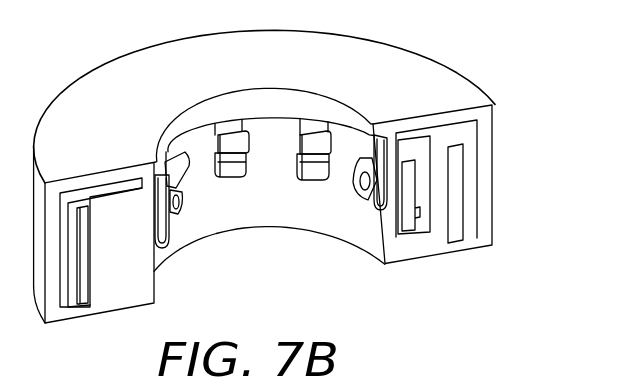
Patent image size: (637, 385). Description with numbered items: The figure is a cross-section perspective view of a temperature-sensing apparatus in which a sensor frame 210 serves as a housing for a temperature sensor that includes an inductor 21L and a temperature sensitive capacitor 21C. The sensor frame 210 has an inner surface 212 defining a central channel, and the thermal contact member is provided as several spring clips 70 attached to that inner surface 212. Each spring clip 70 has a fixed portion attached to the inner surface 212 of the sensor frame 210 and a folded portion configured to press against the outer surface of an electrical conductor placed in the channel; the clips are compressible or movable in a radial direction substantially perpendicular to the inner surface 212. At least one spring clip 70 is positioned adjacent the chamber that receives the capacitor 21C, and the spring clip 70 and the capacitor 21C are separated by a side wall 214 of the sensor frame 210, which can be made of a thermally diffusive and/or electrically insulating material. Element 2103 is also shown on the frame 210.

The sensor frame 210 is at (125, 70).
The inner surface 212 is at (217, 215).
The side wall 214 is at (390, 211).
The mounting panel 2103 is at (410, 153).
The temperature sensitive capacitor 21C is at (412, 191).
The inductor 21L is at (457, 193).
The spring clip 70 is at (310, 164).